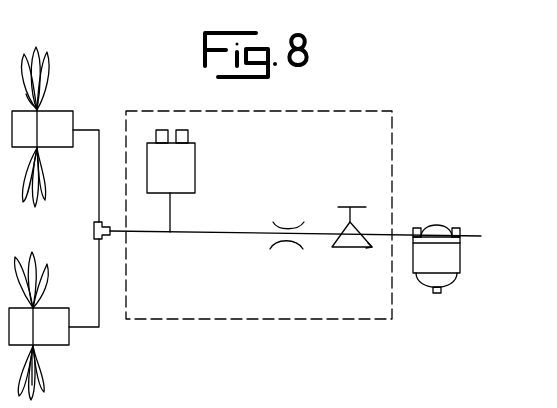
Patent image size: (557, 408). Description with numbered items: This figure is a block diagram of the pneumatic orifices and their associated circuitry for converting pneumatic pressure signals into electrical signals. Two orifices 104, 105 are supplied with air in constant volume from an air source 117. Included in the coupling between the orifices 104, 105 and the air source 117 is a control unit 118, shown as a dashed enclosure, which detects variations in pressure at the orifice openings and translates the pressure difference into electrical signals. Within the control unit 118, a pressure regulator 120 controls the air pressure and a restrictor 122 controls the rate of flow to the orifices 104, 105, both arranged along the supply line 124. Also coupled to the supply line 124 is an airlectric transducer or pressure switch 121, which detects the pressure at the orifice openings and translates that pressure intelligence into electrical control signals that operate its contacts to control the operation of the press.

The orifice 104 is at (38, 127).
The orifice 105 is at (35, 327).
The air source 117 is at (481, 228).
The control unit 118 is at (393, 131).
The pressure regulator 120 is at (372, 247).
The pressure switch 121 is at (187, 167).
The restrictor 122 is at (288, 243).
The supply line 124 is at (196, 231).